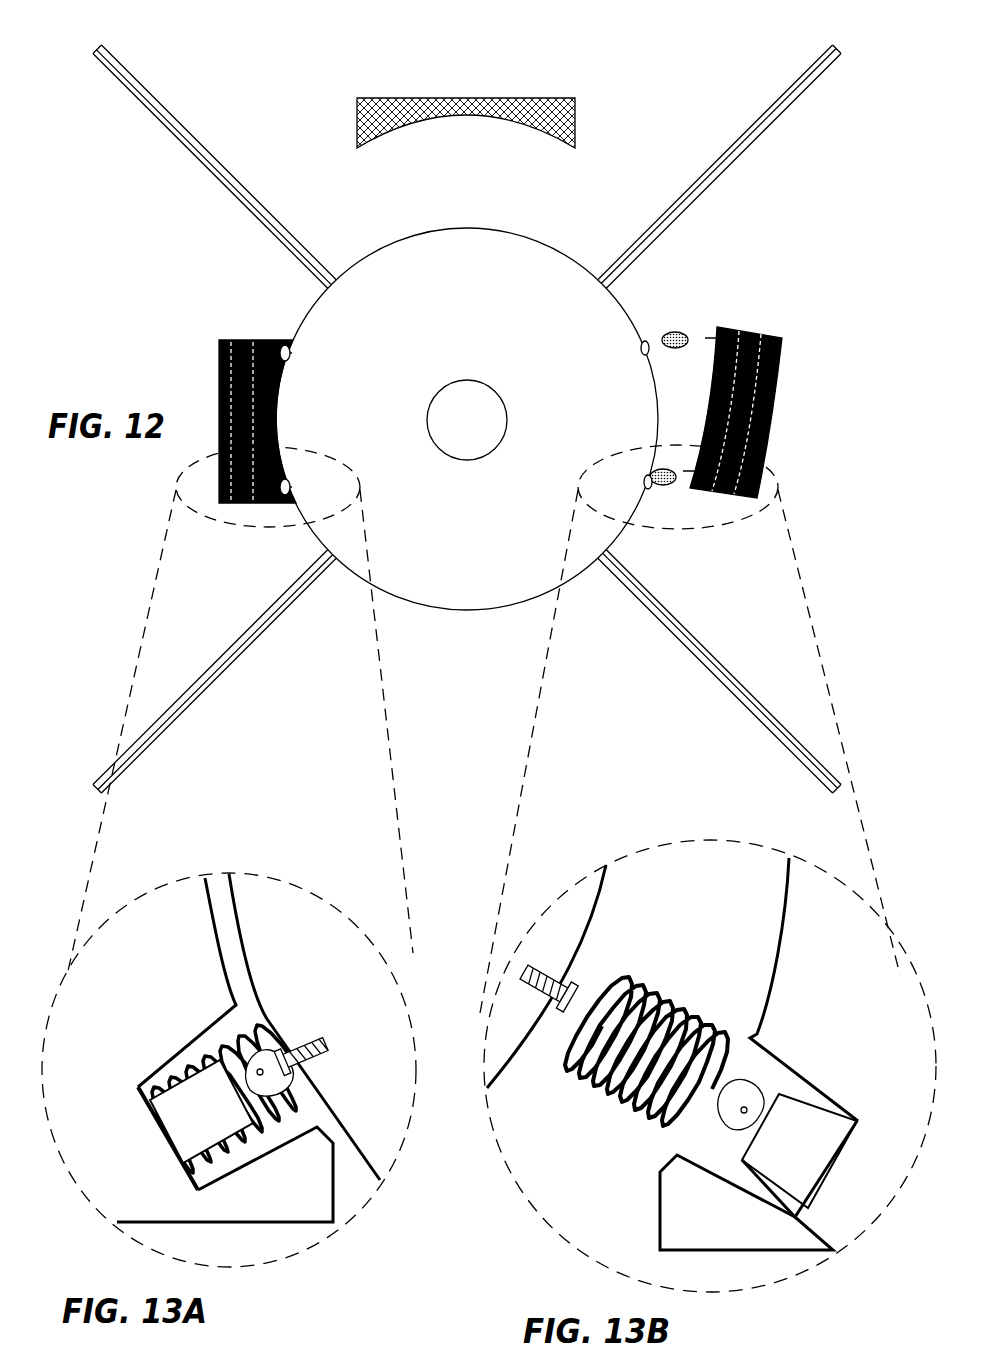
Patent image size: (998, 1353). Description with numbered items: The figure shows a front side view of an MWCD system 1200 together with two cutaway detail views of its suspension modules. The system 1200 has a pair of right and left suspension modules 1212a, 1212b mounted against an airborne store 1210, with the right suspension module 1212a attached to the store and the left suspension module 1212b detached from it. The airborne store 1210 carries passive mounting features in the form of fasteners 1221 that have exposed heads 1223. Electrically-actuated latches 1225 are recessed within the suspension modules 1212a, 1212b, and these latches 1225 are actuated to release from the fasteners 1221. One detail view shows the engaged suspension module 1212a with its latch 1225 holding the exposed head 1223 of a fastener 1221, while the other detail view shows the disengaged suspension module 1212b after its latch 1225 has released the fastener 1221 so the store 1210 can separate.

In FIG. 12, the MWCD system 1200 is at (272, 122).
In FIG. 12, the airborne store 1210 is at (540, 228).
In FIG. 13A, the airborne store 1210 is at (244, 968).
In FIG. 13B, the airborne store 1210 is at (600, 903).
In FIG. 12, the right suspension module 1212a is at (219, 378).
In FIG. 13A, the right suspension module 1212a is at (283, 1223).
In FIG. 12, the left suspension module 1212b is at (776, 392).
In FIG. 13B, the left suspension module 1212b is at (658, 1210).
In FIG. 13A, the fasteners 1221 is at (320, 1030).
In FIG. 13B, the fasteners 1221 is at (527, 965).
In FIG. 12, the exposed heads 1223 is at (650, 340).
In FIG. 13A, the exposed heads 1223 is at (255, 1050).
In FIG. 13B, the exposed heads 1223 is at (583, 980).
In FIG. 13A, the electrically-actuated latches 1225 is at (195, 1129).
In FIG. 13B, the electrically-actuated latches 1225 is at (800, 1157).